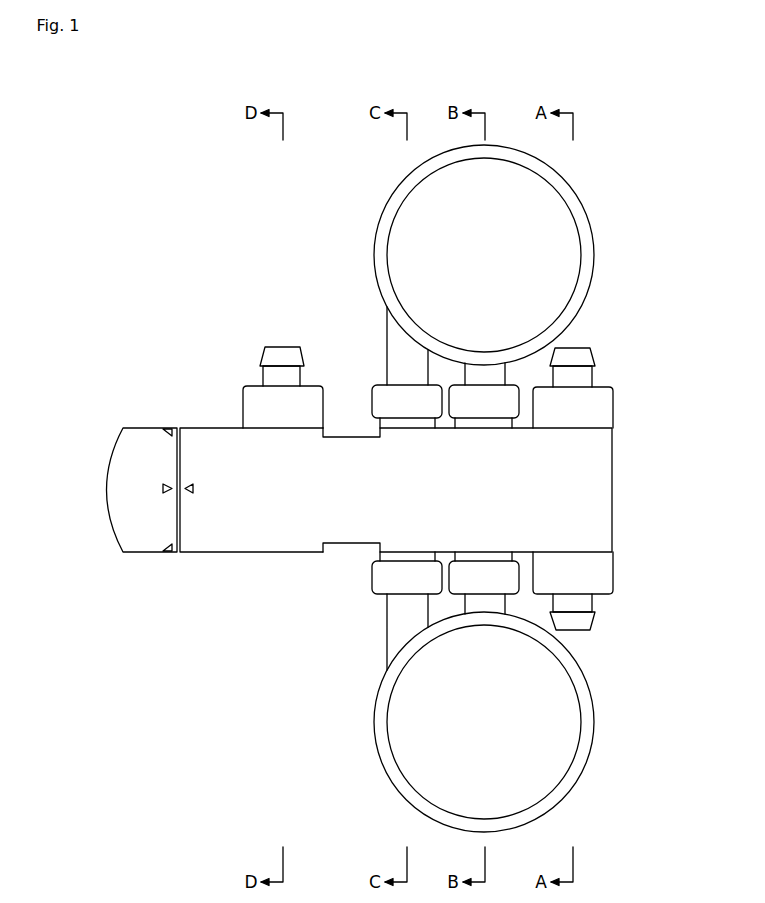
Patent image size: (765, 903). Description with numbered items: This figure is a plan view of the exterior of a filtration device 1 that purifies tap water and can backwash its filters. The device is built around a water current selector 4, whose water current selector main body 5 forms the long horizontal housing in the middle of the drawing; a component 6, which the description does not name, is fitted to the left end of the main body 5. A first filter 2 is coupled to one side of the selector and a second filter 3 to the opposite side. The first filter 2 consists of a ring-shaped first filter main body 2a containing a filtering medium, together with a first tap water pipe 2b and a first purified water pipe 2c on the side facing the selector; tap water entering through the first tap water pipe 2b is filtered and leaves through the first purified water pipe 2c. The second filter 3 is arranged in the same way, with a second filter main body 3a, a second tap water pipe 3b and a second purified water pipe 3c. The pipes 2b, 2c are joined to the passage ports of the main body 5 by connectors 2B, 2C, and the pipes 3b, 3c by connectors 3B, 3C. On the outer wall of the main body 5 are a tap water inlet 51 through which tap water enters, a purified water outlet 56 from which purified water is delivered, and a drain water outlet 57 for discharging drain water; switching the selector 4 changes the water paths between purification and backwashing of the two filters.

The filtration device 1 is at (441, 87).
The first filter 2 is at (501, 286).
The first filter main body 2a is at (568, 272).
The first tap water pipe 2b is at (475, 375).
The first purified water pipe 2c is at (396, 358).
The connector 2B is at (503, 399).
The connector 2C is at (386, 399).
The second filter 3 is at (491, 692).
The second filter main body 3a is at (575, 718).
The second tap water pipe 3b is at (485, 603).
The second purified water pipe 3c is at (403, 617).
The connector 3B is at (510, 581).
The connector 3C is at (386, 578).
The water current selector 4 is at (215, 536).
The water current selector main body 5 is at (253, 553).
The cap 6 is at (147, 553).
The tap water inlet 51 is at (571, 347).
The purified water outlet 56 is at (284, 347).
The drain water outlet 57 is at (577, 632).